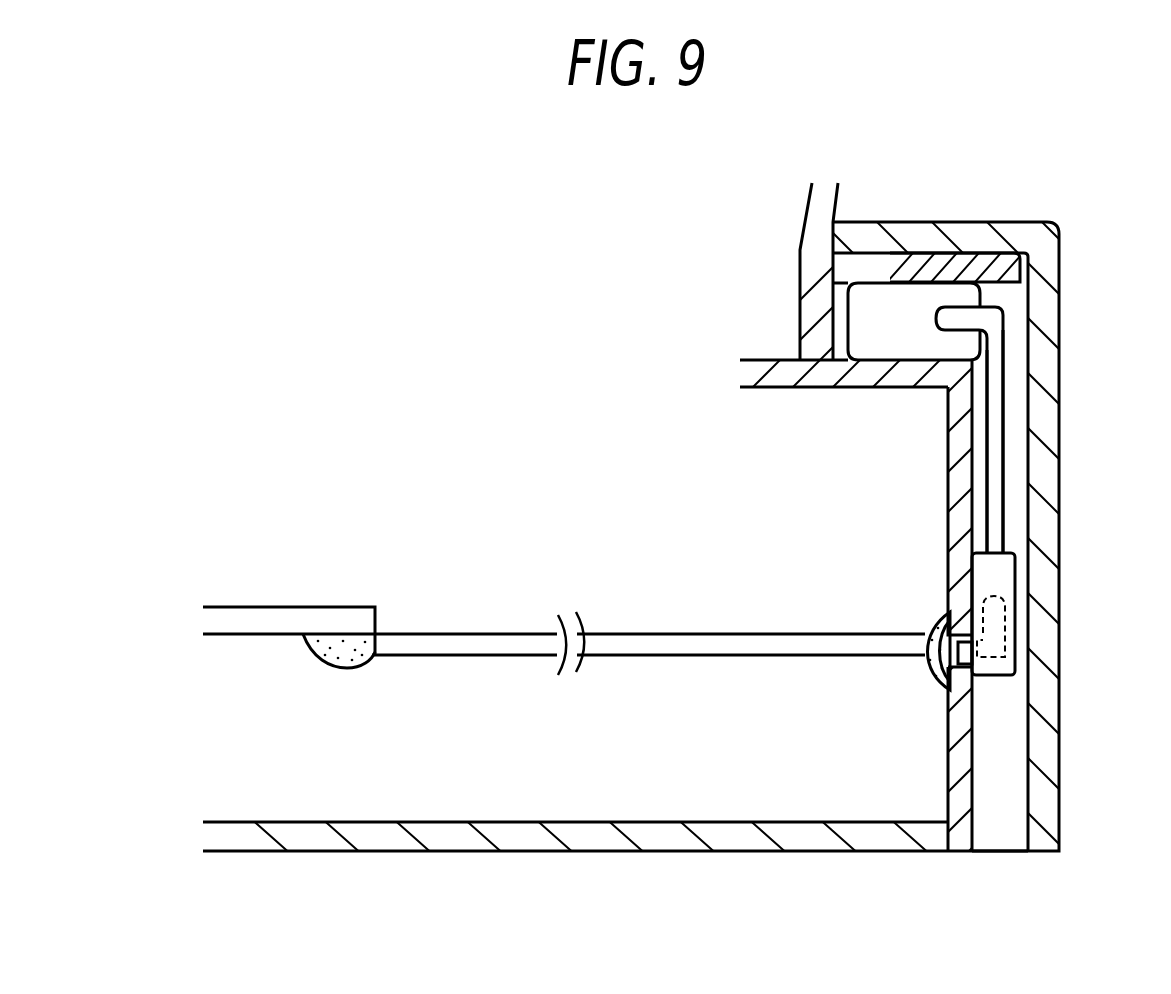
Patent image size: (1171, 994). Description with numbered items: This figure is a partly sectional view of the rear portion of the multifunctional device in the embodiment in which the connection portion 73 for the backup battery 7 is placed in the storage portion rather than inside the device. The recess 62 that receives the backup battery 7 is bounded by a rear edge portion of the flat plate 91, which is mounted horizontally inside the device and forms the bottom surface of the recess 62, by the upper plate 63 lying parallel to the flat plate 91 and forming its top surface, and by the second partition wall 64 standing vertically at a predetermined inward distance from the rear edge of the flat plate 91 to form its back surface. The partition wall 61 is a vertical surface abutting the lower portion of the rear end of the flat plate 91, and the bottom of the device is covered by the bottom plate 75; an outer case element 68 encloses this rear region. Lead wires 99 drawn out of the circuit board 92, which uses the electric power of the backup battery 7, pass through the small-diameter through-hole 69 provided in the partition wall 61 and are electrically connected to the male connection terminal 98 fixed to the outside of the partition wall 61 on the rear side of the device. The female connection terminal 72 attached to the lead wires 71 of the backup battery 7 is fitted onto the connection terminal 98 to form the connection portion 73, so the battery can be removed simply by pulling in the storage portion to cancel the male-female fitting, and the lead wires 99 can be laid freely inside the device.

The backup battery 7 is at (909, 303).
The partition wall 61 is at (958, 478).
The recess 62 is at (849, 278).
The upper plate 63 is at (988, 265).
The second partition wall 64 is at (810, 323).
The case 68 is at (1050, 306).
The small-diameter through-hole 69 is at (925, 632).
The lead wires 71 is at (997, 440).
The connection terminal 72 is at (1000, 577).
The connection portion 73 is at (986, 687).
The bottom plate 75 is at (707, 848).
The flat plate 91 is at (787, 380).
The circuit board 92 is at (328, 620).
The male connection terminal 98 is at (1000, 670).
The lead wires 99 is at (743, 647).